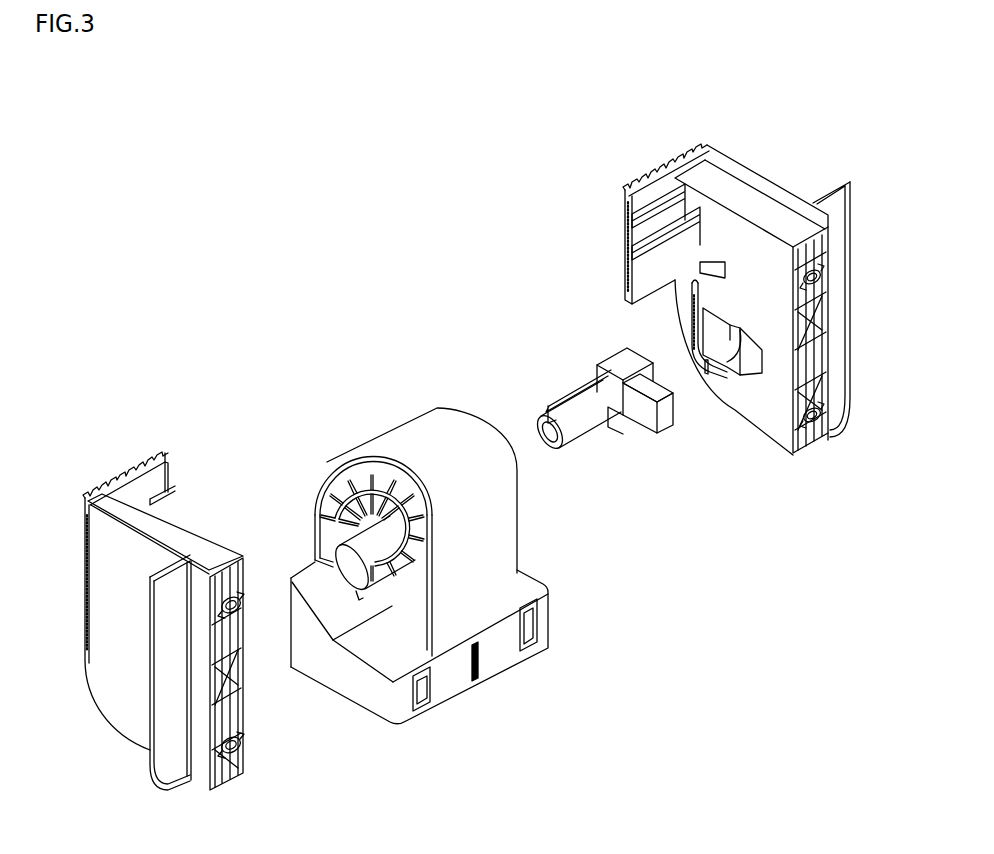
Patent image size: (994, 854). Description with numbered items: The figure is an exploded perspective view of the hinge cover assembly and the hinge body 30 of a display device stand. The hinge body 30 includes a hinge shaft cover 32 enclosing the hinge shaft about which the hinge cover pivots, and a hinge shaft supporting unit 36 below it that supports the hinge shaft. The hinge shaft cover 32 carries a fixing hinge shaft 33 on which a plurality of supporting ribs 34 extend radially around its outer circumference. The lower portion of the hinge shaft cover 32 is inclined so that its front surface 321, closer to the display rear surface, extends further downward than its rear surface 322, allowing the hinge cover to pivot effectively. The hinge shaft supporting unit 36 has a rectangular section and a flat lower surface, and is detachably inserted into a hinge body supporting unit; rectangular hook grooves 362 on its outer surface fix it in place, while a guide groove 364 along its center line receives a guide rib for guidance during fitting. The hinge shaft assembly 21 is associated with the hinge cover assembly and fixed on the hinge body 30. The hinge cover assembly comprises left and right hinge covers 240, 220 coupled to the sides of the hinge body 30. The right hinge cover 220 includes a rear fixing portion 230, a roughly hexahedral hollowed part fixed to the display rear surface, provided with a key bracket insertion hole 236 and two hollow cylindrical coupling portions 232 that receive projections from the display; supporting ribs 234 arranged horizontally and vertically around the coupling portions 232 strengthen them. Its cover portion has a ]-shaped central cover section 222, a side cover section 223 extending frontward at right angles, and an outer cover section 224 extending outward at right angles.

The hinge shaft assembly 21 is at (558, 355).
The hinge body 30 is at (583, 585).
The hinge shaft cover 32 is at (428, 430).
The front surface 321 is at (503, 543).
The rear surface 322 is at (315, 493).
The fixing hinge shaft 33 is at (340, 558).
The supporting ribs 34 is at (333, 492).
The hinge shaft supporting unit 36 is at (355, 685).
The hook groove 362 is at (423, 690).
The guide groove 364 is at (480, 670).
The right hinge cover 220 is at (604, 170).
The central cover section 222 is at (666, 165).
The side cover section 223 is at (752, 172).
The outer cover section 224 is at (832, 188).
The rear fixing portion 230 is at (828, 440).
The coupling portion 232 is at (815, 278).
The supporting ribs 234 is at (633, 228).
The key bracket insertion hole 236 is at (728, 370).
The left hinge cover 240 is at (116, 440).